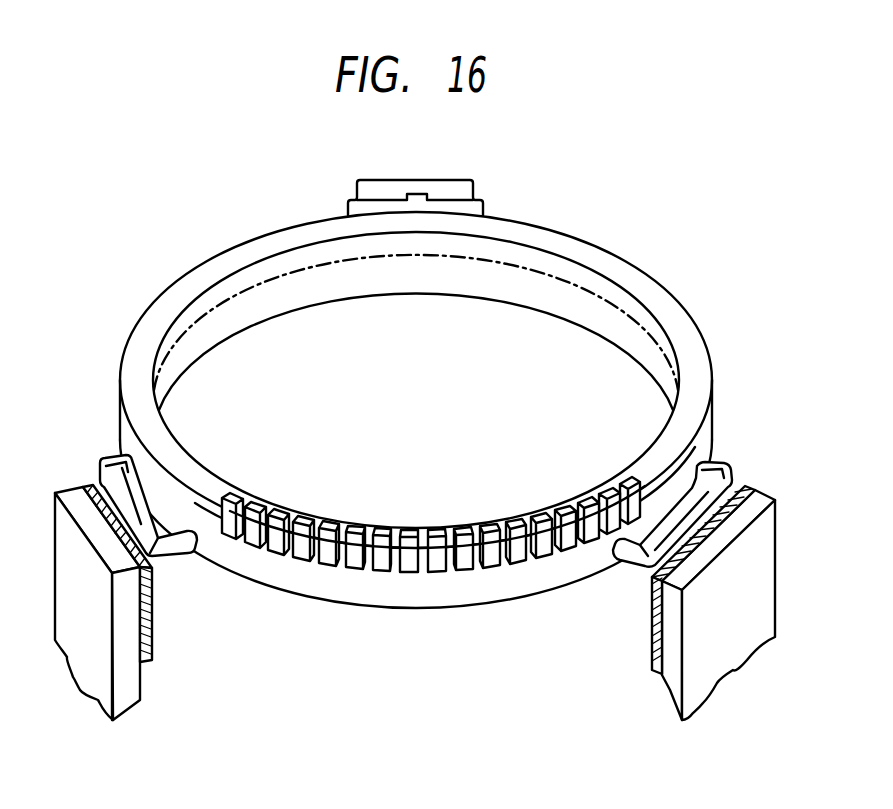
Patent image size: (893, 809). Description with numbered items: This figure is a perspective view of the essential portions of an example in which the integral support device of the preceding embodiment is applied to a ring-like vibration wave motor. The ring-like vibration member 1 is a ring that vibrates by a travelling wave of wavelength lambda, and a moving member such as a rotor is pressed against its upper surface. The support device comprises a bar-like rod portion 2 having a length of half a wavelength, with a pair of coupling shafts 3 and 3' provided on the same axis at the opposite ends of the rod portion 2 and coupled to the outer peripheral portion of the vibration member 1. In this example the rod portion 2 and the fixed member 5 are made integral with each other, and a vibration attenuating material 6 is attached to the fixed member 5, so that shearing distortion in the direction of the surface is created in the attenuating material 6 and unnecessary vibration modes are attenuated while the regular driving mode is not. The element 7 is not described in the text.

The ring-like vibration member 1 is at (350, 593).
The rod portion 2 is at (730, 471).
The coupling shaft 3 is at (612, 593).
The coupling shaft 3' is at (730, 447).
The fixed member 5 is at (650, 650).
The vibration attenuating material 6 is at (660, 673).
The permanent magnet 7 is at (677, 710).